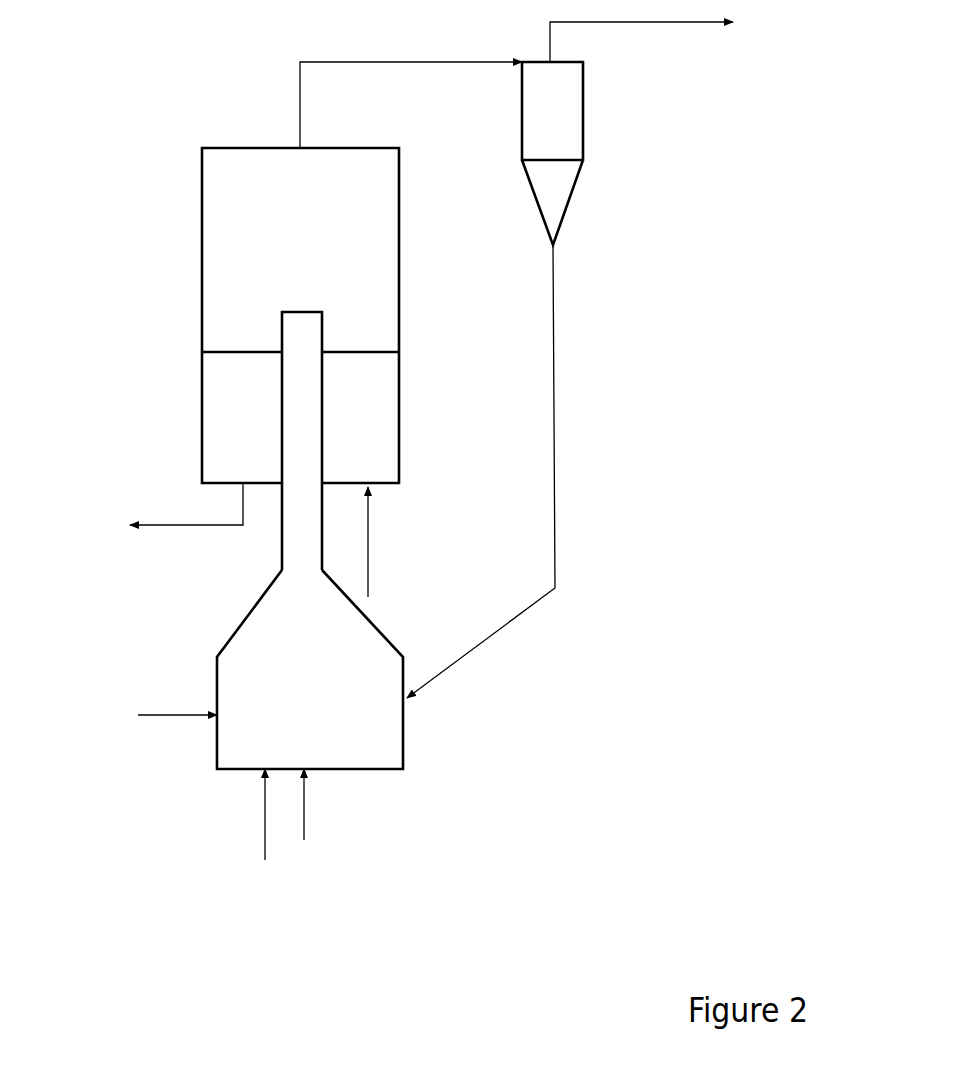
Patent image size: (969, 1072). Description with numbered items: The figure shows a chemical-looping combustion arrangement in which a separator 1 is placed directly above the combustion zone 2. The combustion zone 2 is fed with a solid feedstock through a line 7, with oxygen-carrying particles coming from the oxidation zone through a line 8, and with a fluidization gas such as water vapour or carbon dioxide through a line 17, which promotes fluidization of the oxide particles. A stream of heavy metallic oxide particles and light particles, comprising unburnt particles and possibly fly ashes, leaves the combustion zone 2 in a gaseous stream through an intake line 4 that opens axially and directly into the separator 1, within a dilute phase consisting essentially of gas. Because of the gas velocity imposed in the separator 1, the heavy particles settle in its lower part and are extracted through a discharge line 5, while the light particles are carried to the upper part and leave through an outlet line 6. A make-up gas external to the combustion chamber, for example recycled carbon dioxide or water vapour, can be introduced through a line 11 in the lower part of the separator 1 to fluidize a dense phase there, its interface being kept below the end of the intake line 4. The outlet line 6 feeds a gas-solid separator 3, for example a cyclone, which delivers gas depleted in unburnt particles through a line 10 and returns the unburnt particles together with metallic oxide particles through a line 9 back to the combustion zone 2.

The separator 1 is at (200, 292).
The combustion zone 2 is at (268, 660).
The gas-solid separator 3 is at (560, 122).
The intake line 4 is at (322, 312).
The discharge line 5 is at (155, 525).
The outlet line 6 is at (320, 60).
The line 7 is at (304, 803).
The line 8 is at (190, 718).
The line 9 is at (556, 368).
The line 10 is at (690, 22).
The line 11 is at (370, 547).
The line 17 is at (265, 835).